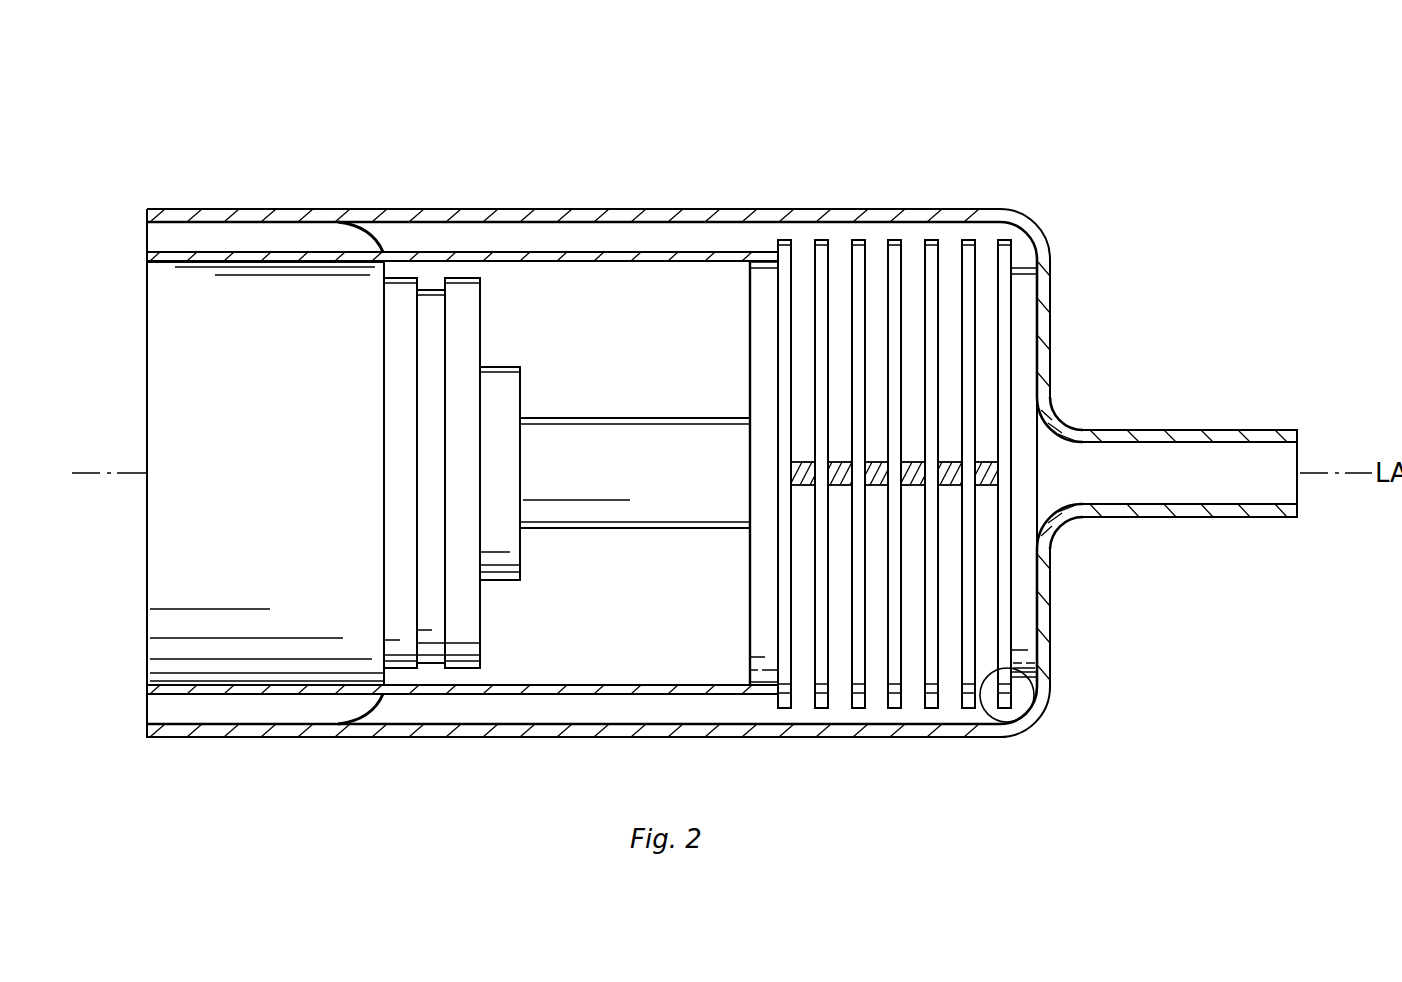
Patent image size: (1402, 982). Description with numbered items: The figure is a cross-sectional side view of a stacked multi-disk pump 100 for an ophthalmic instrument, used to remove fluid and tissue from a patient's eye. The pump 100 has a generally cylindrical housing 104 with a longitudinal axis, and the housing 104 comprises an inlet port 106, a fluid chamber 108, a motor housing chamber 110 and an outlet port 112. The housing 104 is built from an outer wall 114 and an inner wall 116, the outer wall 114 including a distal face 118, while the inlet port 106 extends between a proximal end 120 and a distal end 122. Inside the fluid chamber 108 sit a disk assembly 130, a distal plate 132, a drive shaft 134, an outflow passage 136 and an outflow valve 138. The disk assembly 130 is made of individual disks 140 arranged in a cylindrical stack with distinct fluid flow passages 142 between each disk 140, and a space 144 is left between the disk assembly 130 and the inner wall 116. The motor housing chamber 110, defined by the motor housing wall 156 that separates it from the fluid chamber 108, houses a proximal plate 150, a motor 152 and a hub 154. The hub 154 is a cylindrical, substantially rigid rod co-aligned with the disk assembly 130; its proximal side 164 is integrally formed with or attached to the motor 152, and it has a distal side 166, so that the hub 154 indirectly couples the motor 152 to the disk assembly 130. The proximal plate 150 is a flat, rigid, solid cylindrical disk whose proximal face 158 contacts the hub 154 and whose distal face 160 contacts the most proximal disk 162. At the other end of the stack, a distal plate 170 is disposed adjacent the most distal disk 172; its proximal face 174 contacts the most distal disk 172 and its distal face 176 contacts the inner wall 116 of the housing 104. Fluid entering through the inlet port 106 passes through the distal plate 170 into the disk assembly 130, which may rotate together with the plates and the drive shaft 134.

The stacked multi-disk pump 100 is at (696, 102).
The housing 104 is at (517, 209).
The inlet port 106 is at (1255, 488).
The fluid chamber 108 is at (985, 248).
The motor housing chamber 110 is at (503, 690).
The outlet port 112 is at (165, 243).
The outer wall 114 is at (392, 738).
The inner wall 116 is at (535, 700).
The distal face 118 is at (1050, 296).
The proximal end 120 is at (1065, 427).
The distal end 122 is at (1283, 455).
The disk assembly 130 is at (1012, 197).
The distal plate 132 is at (1045, 697).
The drive shaft 134 is at (808, 462).
The outflow passage 136 is at (590, 252).
The outflow valve 138 is at (378, 250).
The disk 140 is at (965, 715).
The fluid flow passage 142 is at (912, 705).
The space 144 is at (842, 735).
The proximal plate 150 is at (765, 690).
The motor 152 is at (282, 488).
The hub 154 is at (607, 418).
The motor housing wall 156 is at (445, 262).
The proximal face 158 is at (750, 322).
The distal face 160 is at (778, 660).
The most proximal disk 162 is at (770, 243).
The proximal side 164 is at (517, 437).
The distal side 166 is at (755, 515).
The distal plate 170 is at (1022, 583).
The most distal disk 172 is at (1012, 738).
The proximal face 174 is at (1012, 625).
The distal face 176 is at (1040, 478).